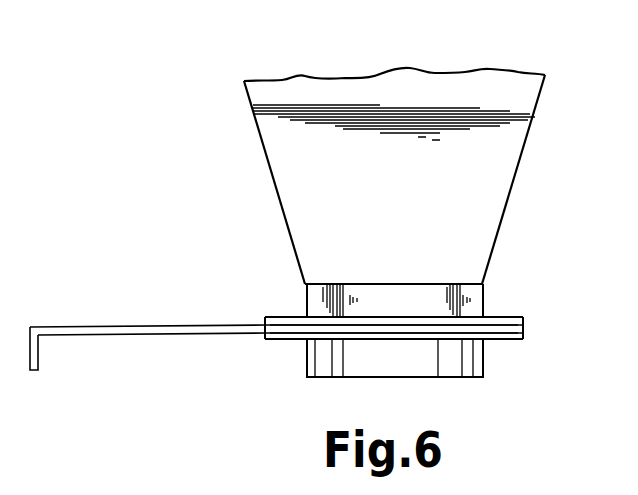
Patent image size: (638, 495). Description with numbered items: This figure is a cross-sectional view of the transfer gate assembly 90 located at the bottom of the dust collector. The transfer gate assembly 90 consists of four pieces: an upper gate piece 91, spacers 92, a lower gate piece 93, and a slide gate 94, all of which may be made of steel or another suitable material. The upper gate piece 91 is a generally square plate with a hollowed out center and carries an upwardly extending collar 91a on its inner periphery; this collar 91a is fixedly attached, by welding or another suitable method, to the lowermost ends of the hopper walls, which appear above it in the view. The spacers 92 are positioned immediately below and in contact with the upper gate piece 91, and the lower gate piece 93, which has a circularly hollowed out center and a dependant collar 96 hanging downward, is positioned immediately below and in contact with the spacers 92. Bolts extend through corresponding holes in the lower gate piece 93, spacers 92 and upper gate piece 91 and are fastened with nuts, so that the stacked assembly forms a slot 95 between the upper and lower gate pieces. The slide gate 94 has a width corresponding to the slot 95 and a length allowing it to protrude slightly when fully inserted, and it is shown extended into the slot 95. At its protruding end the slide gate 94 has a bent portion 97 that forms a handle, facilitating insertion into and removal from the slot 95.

The transfer gate assembly 90 is at (498, 296).
The upper gate piece 91 is at (523, 318).
The upwardly extending collar 91a is at (307, 304).
The spacers 92 is at (523, 328).
The lower gate piece 93 is at (523, 339).
The slide gate 94 is at (178, 336).
The slot 95 is at (334, 334).
The dependant collar 96 is at (485, 375).
The bent portion 97 is at (38, 362).